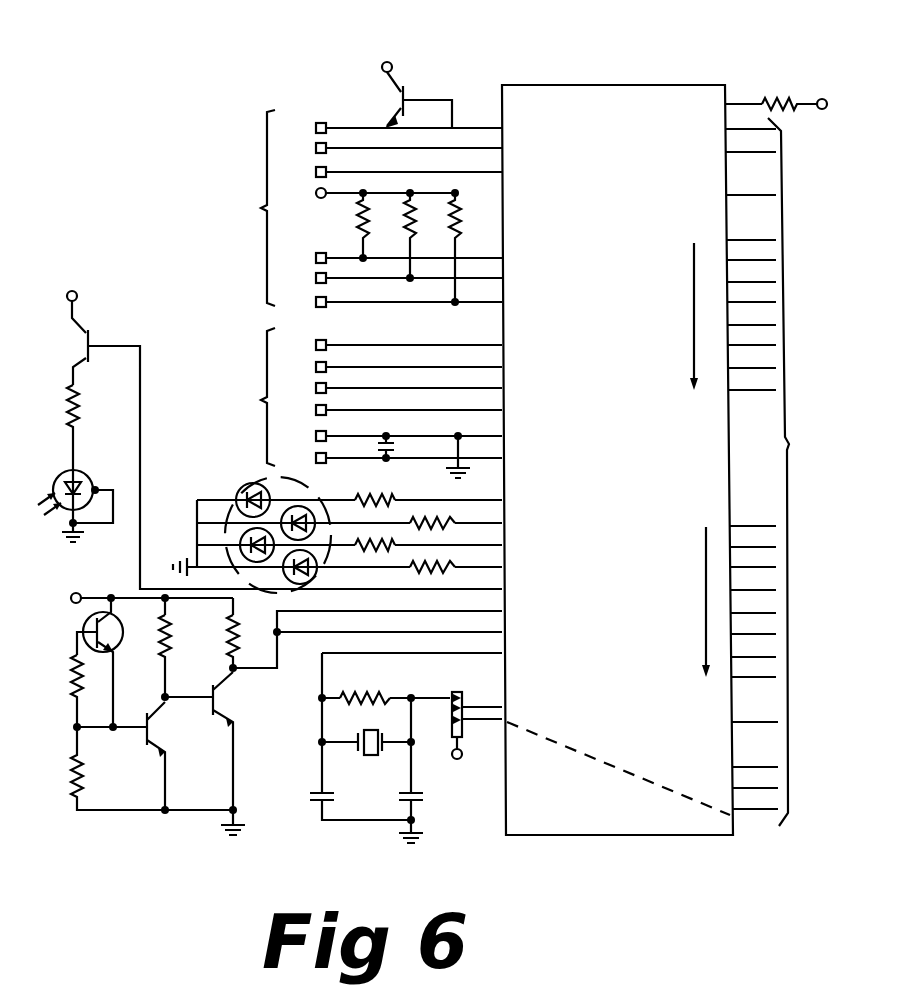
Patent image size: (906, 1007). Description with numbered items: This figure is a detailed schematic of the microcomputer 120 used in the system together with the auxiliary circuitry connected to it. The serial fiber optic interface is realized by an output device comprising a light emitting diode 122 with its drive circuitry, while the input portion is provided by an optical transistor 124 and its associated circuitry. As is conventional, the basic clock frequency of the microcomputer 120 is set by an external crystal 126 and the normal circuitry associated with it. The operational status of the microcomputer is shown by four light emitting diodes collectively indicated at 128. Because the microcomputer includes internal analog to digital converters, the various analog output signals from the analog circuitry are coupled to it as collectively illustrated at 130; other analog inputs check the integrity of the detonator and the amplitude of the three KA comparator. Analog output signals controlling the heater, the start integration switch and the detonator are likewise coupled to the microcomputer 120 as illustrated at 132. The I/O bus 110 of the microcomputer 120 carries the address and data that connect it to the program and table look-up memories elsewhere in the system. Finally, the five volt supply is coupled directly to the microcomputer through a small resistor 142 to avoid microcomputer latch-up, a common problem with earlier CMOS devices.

The I/O bus 110 is at (790, 443).
The microcomputer 120 is at (572, 836).
The light emitting diode 122 is at (62, 470).
The optical transistor 124 is at (82, 626).
The external crystal 126 is at (355, 740).
The light emitting diodes 128 is at (250, 484).
The analog input signals 130 is at (261, 400).
The control output signals 132 is at (261, 208).
The small resistor 142 is at (775, 95).